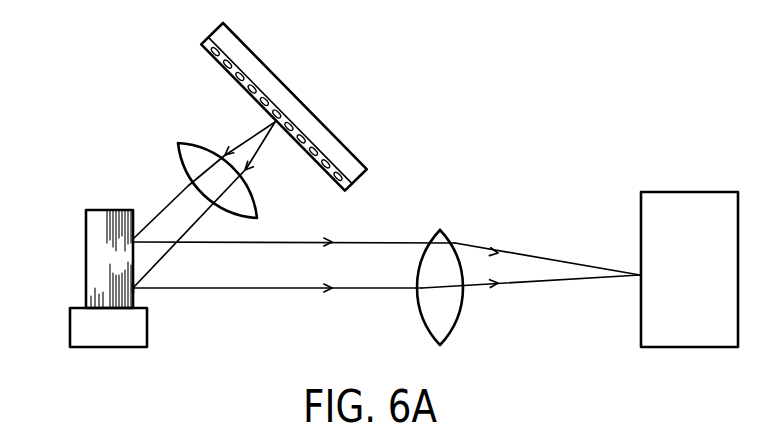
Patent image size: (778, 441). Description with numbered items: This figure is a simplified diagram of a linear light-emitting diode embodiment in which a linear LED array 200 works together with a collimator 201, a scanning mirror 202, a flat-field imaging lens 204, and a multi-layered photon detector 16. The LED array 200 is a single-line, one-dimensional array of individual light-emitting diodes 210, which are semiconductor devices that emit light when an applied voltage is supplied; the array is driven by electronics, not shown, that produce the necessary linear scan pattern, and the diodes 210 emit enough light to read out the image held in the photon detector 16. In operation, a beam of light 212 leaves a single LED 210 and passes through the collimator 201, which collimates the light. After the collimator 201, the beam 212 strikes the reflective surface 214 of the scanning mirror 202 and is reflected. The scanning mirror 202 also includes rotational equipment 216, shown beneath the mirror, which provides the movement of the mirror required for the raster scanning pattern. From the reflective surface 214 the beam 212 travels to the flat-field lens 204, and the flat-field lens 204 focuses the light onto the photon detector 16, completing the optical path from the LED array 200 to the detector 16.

The multi-layered photon detector 16 is at (687, 192).
The linear LED array 200 is at (287, 79).
The collimator 201 is at (180, 143).
The scanning mirror 202 is at (75, 288).
The flat-field lens 204 is at (457, 248).
The light-emitting diodes 210 is at (279, 125).
The beam of light 212 is at (251, 142).
The reflective surface 214 is at (134, 289).
The rotational equipment 216 is at (133, 332).